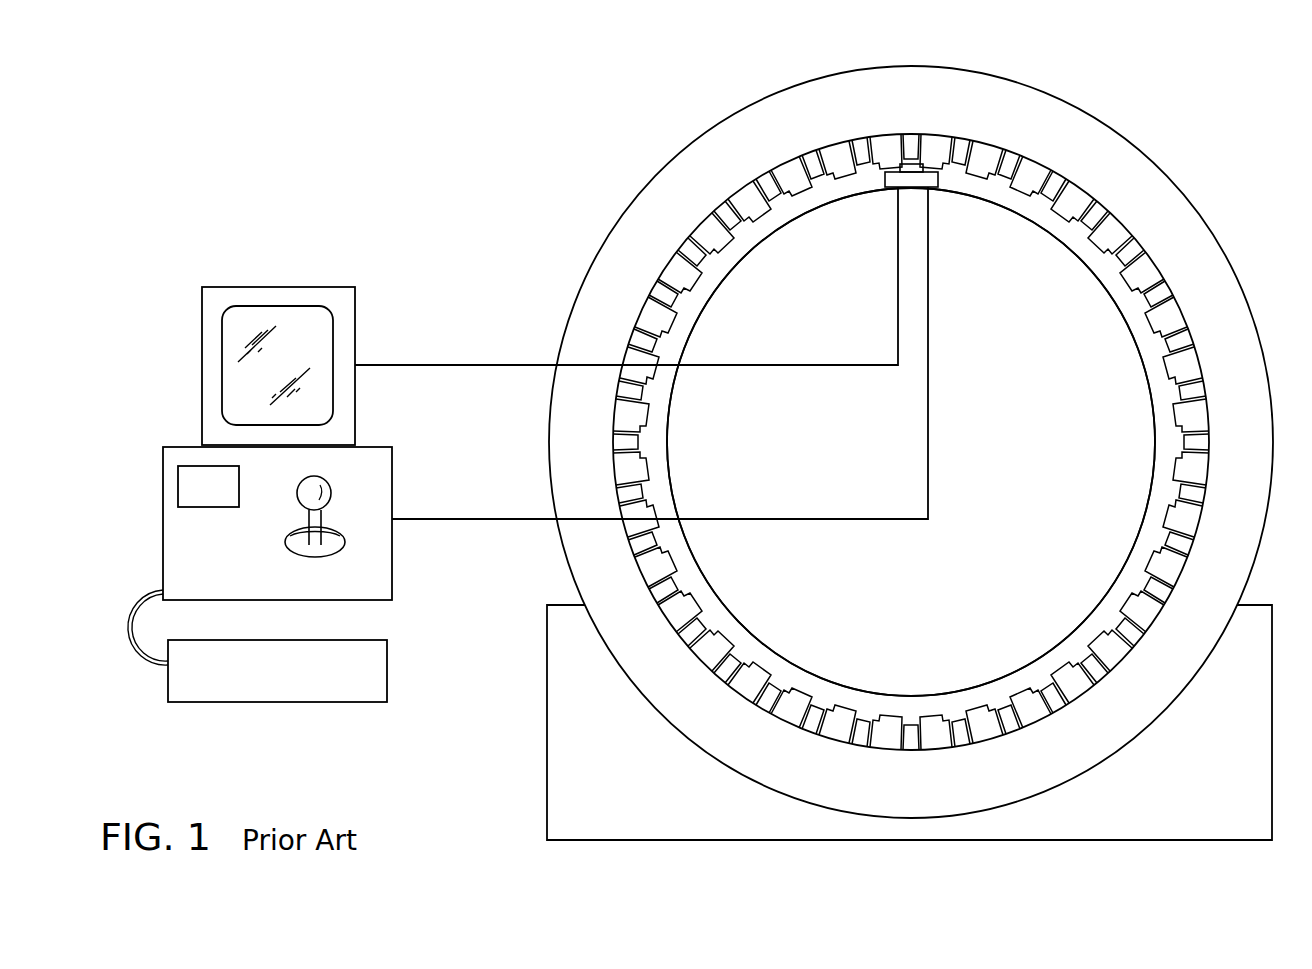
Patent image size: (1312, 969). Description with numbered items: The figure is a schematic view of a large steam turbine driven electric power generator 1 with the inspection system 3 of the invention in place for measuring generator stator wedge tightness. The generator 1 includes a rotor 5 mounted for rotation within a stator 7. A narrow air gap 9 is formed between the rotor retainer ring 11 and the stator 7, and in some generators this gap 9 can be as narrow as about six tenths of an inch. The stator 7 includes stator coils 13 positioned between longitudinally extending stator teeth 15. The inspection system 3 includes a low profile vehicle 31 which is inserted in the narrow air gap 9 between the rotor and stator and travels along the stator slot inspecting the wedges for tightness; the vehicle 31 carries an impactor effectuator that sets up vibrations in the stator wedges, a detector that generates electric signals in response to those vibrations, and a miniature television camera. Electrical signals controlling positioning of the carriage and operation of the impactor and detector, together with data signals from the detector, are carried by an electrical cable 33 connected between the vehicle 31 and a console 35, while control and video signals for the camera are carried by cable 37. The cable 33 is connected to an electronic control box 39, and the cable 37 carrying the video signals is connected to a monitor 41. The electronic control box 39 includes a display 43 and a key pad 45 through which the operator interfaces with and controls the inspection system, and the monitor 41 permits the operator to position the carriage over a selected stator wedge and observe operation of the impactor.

The electric power generator 1 is at (545, 745).
The inspection system 3 is at (277, 472).
The rotor 5 is at (1132, 373).
The stator 7 is at (1128, 167).
The air gap 9 is at (911, 433).
The rotor retainer ring 11 is at (1155, 463).
The stator coils 13 is at (765, 199).
The stator teeth 15 is at (784, 183).
The low profile vehicle 31 is at (883, 183).
The electrical cable 33 is at (827, 521).
The console 35 is at (238, 344).
The cable 37 is at (827, 368).
The electronic control box 39 is at (239, 523).
The monitor 41 is at (208, 385).
The display 43 is at (188, 492).
The key pad 45 is at (390, 678).